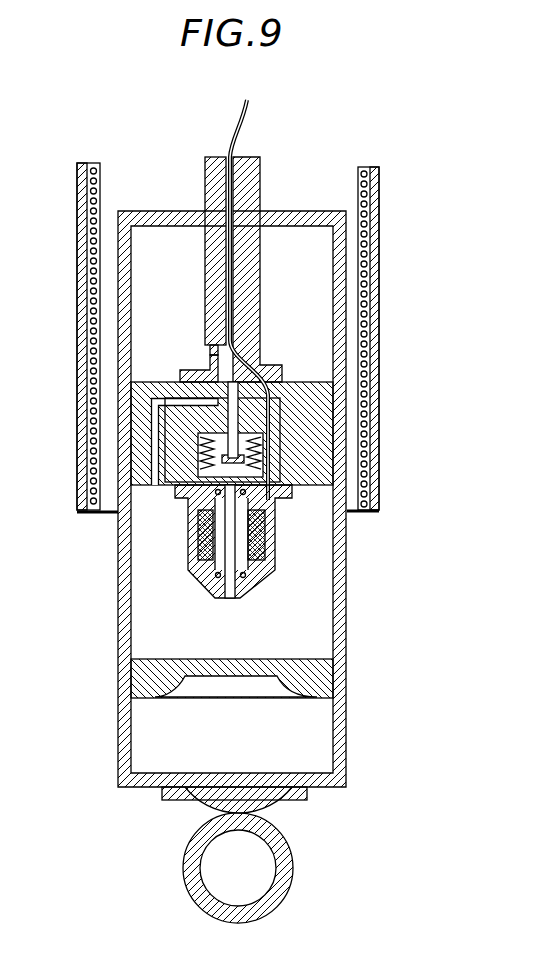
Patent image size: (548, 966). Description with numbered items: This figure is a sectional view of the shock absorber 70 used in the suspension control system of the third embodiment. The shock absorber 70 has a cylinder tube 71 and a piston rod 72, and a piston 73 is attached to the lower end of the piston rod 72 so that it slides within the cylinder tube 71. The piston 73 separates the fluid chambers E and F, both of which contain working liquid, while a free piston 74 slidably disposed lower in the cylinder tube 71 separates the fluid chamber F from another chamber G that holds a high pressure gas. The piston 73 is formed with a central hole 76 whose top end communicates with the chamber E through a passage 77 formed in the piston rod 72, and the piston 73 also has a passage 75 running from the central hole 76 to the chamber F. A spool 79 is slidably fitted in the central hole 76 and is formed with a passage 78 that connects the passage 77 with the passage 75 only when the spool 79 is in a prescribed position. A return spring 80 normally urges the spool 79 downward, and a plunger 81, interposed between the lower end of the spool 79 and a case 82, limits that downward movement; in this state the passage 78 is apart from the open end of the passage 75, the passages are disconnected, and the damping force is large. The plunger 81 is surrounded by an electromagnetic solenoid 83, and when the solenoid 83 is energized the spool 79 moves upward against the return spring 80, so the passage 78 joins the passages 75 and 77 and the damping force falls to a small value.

The shock absorber 70 is at (348, 594).
The cylinder tube 71 is at (125, 628).
The piston rod 72 is at (250, 176).
The piston 73 is at (318, 456).
The free piston 74 is at (150, 684).
The passage 75 is at (152, 405).
The central hole 76 is at (272, 388).
The passage 77 is at (210, 352).
The passage 78 is at (218, 418).
The spool 79 is at (198, 378).
The return spring 80 is at (284, 492).
The plunger 81 is at (230, 600).
The case 82 is at (198, 545).
The electromagnetic solenoid 83 is at (263, 540).
The fluid chamber E is at (320, 340).
The fluid chamber F is at (315, 645).
The chamber G is at (318, 743).